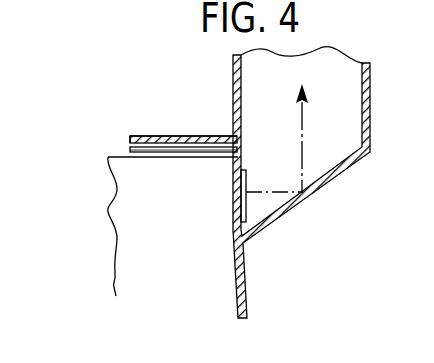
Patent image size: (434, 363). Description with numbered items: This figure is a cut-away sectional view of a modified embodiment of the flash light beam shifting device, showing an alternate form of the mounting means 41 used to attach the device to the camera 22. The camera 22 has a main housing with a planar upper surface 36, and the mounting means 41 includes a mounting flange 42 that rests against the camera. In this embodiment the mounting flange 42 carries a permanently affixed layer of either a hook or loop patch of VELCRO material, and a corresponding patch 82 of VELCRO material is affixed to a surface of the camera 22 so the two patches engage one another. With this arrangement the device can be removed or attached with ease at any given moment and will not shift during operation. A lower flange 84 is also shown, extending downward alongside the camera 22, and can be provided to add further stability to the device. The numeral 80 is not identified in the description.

The camera 22 is at (103, 218).
The planar upper surface 36 is at (114, 156).
The mounting means 41 is at (124, 133).
The mounting flange 42 is at (162, 136).
The upper layer 80 is at (203, 136).
The corresponding patch of VELCRO material 82 is at (202, 153).
The lower flange 84 is at (245, 286).